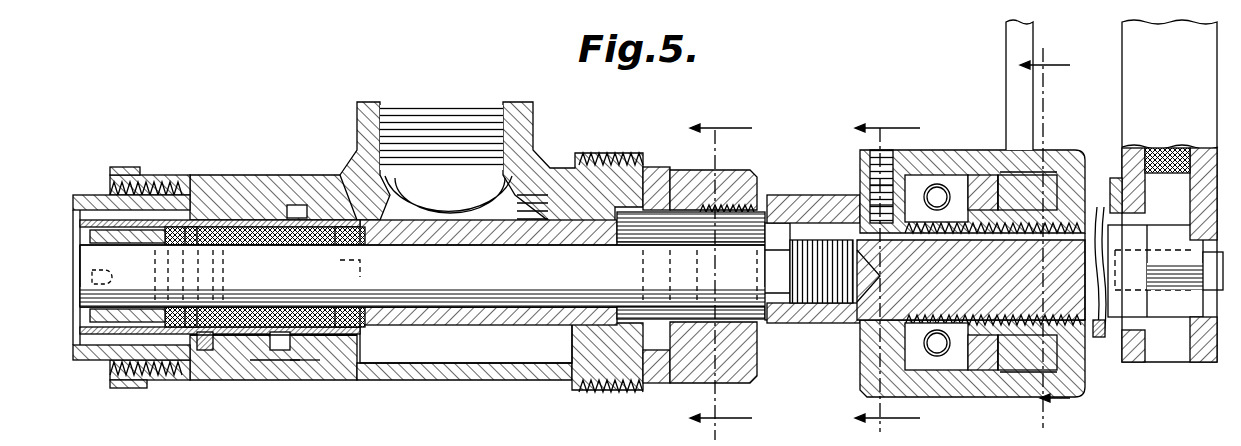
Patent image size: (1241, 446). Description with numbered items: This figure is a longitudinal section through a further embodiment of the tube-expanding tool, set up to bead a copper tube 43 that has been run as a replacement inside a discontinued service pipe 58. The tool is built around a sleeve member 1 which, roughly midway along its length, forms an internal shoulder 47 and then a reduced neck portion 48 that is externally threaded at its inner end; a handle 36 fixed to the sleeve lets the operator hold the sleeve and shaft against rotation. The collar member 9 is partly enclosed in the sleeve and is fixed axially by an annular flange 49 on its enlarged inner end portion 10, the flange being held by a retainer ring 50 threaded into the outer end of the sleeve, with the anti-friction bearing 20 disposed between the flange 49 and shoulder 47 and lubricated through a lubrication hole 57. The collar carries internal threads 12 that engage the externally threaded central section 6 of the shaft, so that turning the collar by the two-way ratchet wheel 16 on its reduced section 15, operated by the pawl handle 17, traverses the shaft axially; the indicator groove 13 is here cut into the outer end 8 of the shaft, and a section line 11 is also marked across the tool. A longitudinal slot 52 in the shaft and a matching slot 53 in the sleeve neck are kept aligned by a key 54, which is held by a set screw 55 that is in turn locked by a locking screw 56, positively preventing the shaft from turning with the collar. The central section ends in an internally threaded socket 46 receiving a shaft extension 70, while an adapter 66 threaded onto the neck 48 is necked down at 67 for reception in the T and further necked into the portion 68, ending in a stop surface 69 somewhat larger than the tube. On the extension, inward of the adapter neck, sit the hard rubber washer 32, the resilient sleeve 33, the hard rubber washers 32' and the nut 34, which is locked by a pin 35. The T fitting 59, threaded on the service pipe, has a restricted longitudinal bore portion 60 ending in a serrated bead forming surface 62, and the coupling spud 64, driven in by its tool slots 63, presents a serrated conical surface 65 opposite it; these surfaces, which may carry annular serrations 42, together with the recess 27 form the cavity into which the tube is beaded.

The sleeve member 1 is at (985, 175).
The central section 6 is at (880, 300).
The outer end 8 is at (1212, 292).
The collar member 9 is at (1105, 370).
The enlarged inner end portion 10 is at (1105, 388).
The section line 11 is at (1045, 236).
The internal threads 12 is at (1065, 322).
The indicator groove 13 is at (1175, 330).
The reduced section 15 is at (1118, 200).
The two-way ratchet wheel 16 is at (1162, 340).
The pawl handle 17 is at (1122, 92).
The anti-friction bearing 20 is at (940, 196).
The recess 27 is at (268, 365).
The hard rubber washer 32 is at (338, 235).
The hard rubber washers 32' is at (185, 235).
The resilient sleeve 33 is at (242, 236).
The nut 34 is at (120, 236).
The pin 35 is at (95, 276).
The handle 36 is at (1006, 42).
The annular serrations 42 is at (296, 206).
The copper tube 43 is at (76, 346).
The internally threaded socket 46 is at (822, 304).
The internal shoulder 47 is at (915, 175).
The reduced neck portion 48 is at (800, 200).
The annular flange 49 is at (962, 372).
The retainer ring 50 is at (1010, 380).
The longitudinal slot 52 is at (777, 223).
The slot 53 is at (760, 215).
The key 54 is at (866, 208).
The set screw 55 is at (868, 190).
The locking screw 56 is at (878, 165).
The lubrication hole 57 is at (928, 200).
The discontinued service pipe 58 is at (112, 376).
The T fitting 59 is at (382, 386).
The restricted longitudinal bore portion 60 is at (240, 340).
The serrated bead forming surface 62 is at (213, 350).
The tool slots 63 is at (325, 345).
The coupling spud 64 is at (302, 365).
The serrated conical surface 65 is at (282, 350).
The adapter 66 is at (700, 384).
The necked-down portion 67 is at (657, 384).
The neck portion 68 is at (532, 325).
The stop surface 69 is at (408, 382).
The shaft extension 70 is at (486, 290).